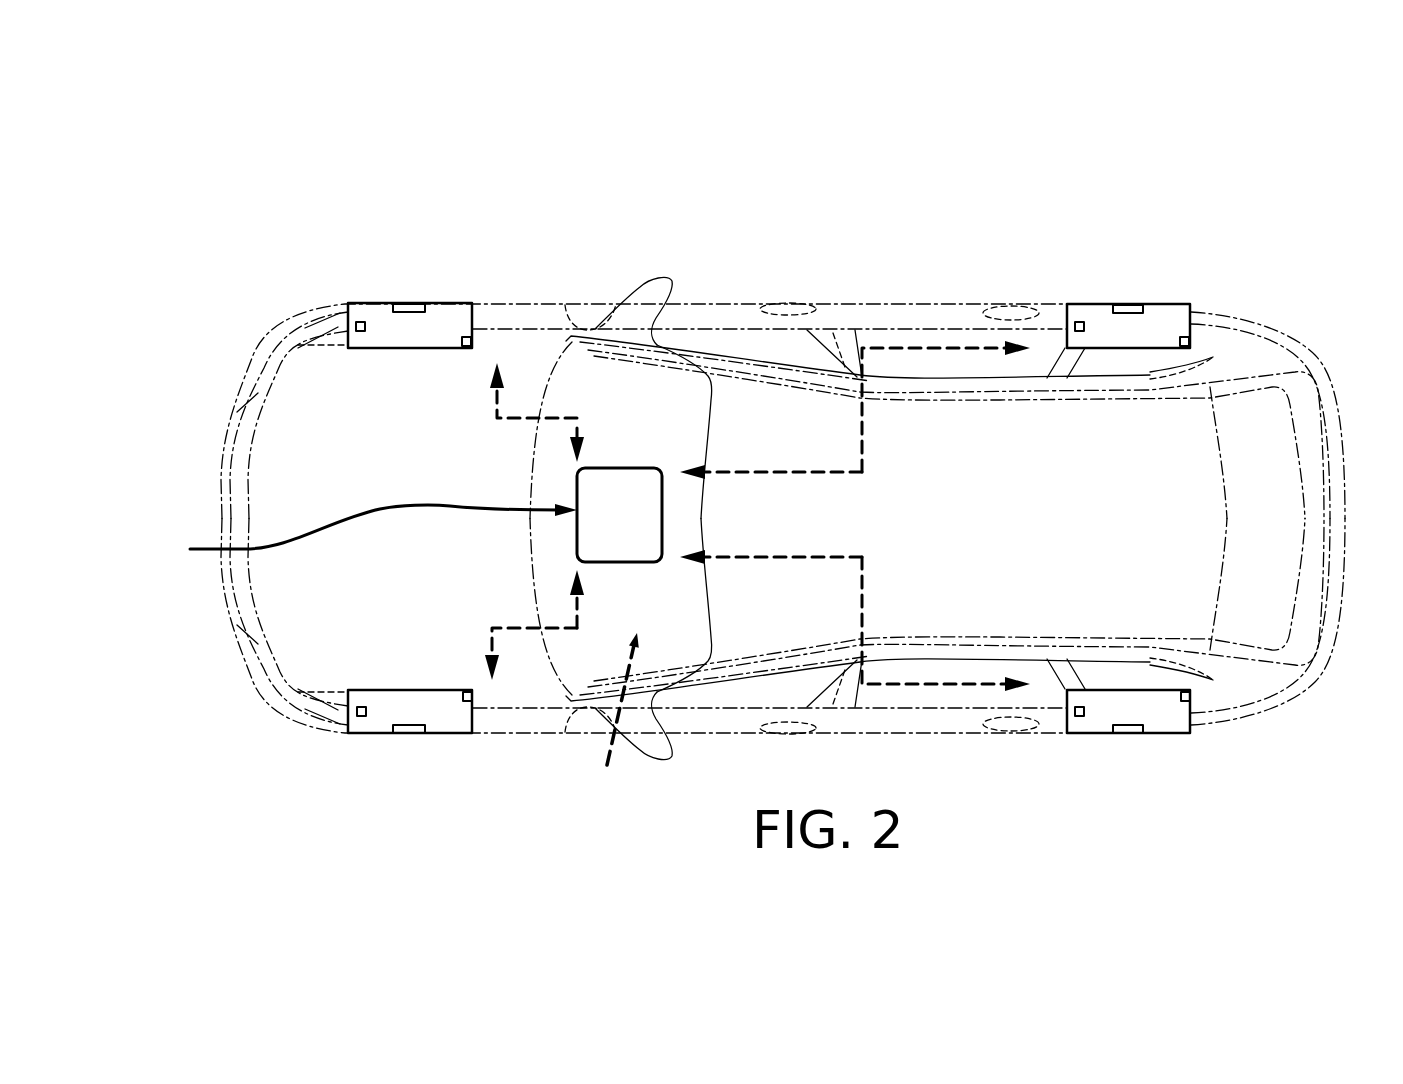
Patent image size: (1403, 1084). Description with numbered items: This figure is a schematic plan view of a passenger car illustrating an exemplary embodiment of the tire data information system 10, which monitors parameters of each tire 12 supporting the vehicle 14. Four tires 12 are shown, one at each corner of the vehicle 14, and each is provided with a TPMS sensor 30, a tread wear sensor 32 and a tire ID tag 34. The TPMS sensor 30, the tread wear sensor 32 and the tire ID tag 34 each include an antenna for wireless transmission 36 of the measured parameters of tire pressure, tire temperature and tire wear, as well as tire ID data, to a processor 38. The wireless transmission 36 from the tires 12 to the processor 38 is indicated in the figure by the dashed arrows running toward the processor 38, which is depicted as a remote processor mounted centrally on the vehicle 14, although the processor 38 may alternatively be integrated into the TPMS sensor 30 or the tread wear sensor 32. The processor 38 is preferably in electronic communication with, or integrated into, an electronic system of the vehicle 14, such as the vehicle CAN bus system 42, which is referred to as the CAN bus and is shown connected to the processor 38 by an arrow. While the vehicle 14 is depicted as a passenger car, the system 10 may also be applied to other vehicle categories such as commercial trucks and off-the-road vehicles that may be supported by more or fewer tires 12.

The tire data information system 10 is at (783, 431).
The tire 12 is at (461, 285).
The vehicle 14 is at (971, 300).
The TPMS sensor 30 is at (472, 340).
The tread wear sensor 32 is at (362, 322).
The tire ID tag 34 is at (410, 307).
The wireless transmission 36 is at (580, 420).
The processor 38 is at (365, 535).
The vehicle CAN bus system 42 is at (613, 718).